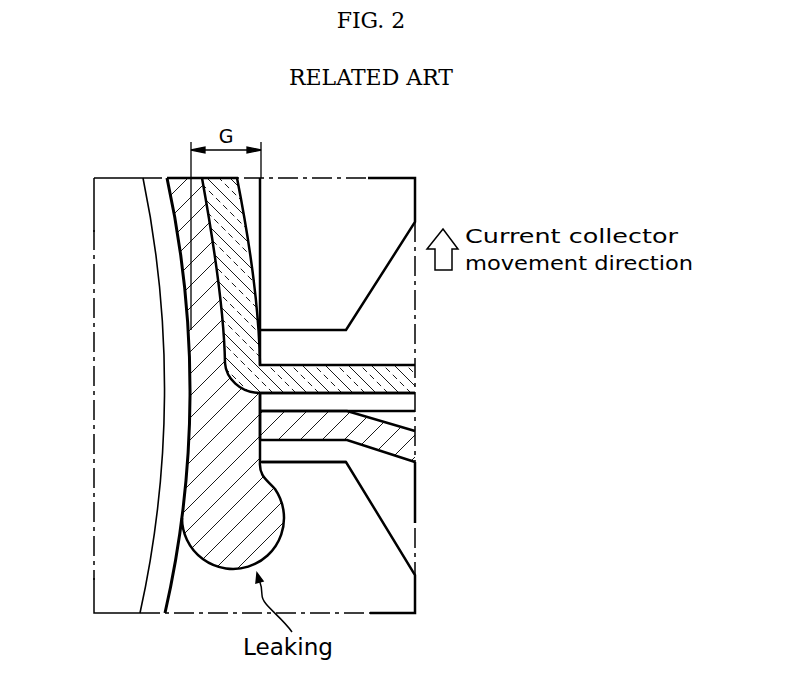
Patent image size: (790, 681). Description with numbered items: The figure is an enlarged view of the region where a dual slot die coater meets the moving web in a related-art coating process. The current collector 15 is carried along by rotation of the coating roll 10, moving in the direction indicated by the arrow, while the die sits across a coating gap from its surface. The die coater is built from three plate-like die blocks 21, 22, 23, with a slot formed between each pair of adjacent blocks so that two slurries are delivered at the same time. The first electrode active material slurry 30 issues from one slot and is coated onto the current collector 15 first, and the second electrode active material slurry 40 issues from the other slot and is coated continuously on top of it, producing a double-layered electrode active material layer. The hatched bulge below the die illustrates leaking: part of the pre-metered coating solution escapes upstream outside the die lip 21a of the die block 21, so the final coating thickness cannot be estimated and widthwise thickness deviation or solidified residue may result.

The coating roll 10 is at (113, 393).
The current collector 15 is at (177, 432).
The die block 21 is at (408, 506).
The die lip 21a is at (305, 452).
The die block 22 is at (408, 412).
The die block 23 is at (408, 318).
The first electrode active material slurry 30 is at (408, 446).
The second electrode active material slurry 40 is at (408, 378).